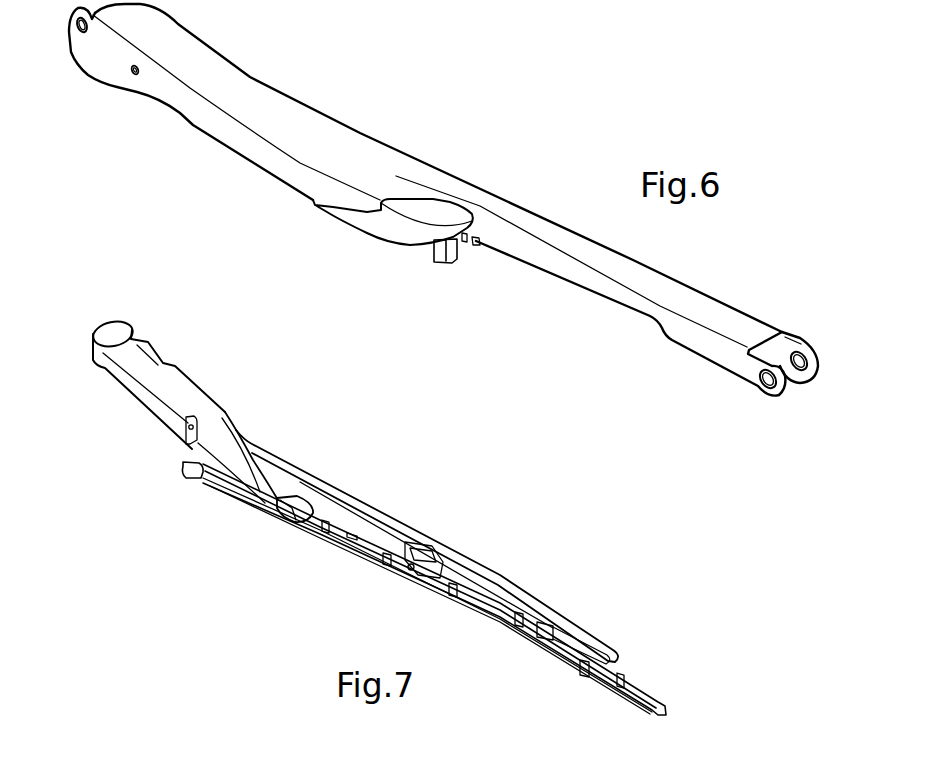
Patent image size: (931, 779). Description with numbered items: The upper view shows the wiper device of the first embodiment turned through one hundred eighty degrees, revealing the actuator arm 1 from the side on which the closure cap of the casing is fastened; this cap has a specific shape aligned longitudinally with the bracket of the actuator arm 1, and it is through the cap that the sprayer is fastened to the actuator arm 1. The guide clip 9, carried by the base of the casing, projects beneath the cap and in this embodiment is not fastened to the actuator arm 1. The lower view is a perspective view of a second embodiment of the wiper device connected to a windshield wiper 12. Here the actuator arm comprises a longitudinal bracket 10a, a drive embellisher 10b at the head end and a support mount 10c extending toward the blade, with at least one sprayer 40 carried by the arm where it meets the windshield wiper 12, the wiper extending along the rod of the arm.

In FIG. 6, the actuator arm 1 is at (222, 68).
In FIG. 6, the guide clip 9 is at (438, 263).
In FIG. 7, the drive embellisher 10b is at (173, 377).
In FIG. 7, the longitudinal bracket 10a is at (233, 445).
In FIG. 7, the support mount 10c is at (463, 550).
In FIG. 7, the sprayer 40 is at (293, 500).
In FIG. 7, the windshield wiper 12 is at (603, 680).